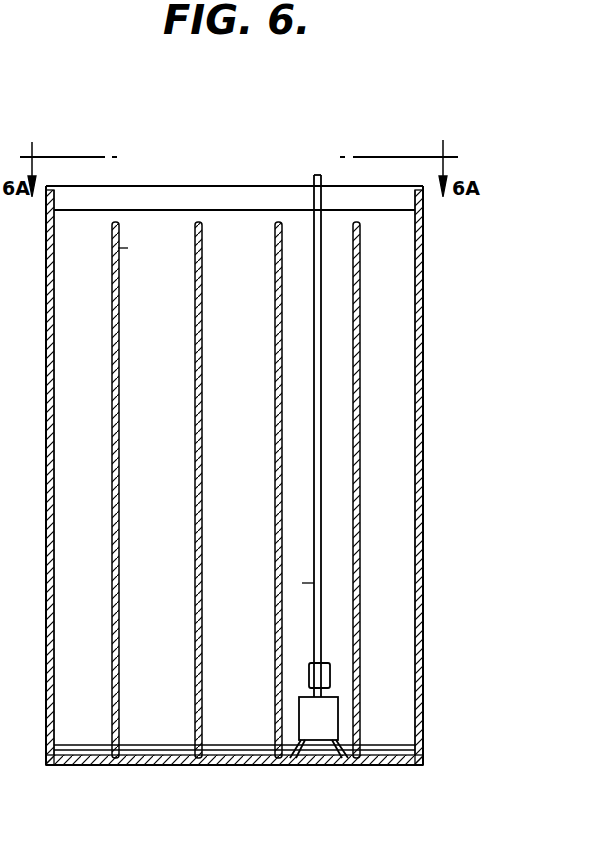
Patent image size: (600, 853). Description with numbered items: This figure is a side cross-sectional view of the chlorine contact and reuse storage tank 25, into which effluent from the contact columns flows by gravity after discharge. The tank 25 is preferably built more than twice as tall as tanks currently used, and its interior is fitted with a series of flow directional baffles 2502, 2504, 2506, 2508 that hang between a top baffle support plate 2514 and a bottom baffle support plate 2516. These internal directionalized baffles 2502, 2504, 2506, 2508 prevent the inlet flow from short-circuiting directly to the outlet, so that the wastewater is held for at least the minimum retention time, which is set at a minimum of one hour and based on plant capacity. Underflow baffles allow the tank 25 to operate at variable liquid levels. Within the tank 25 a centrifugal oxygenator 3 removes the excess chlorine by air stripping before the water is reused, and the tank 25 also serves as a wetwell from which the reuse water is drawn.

The chlorine contact and reuse storage tank 25 is at (438, 466).
The top baffle support plate 2514 is at (153, 210).
The bottom baffle support plate 2516 is at (392, 742).
The flow directional baffle 2508 is at (118, 305).
The flow directional baffle 2506 is at (193, 382).
The flow directional baffle 2504 is at (275, 337).
The flow directional baffle 2502 is at (360, 360).
The centrifugal oxygenator 3 is at (342, 708).